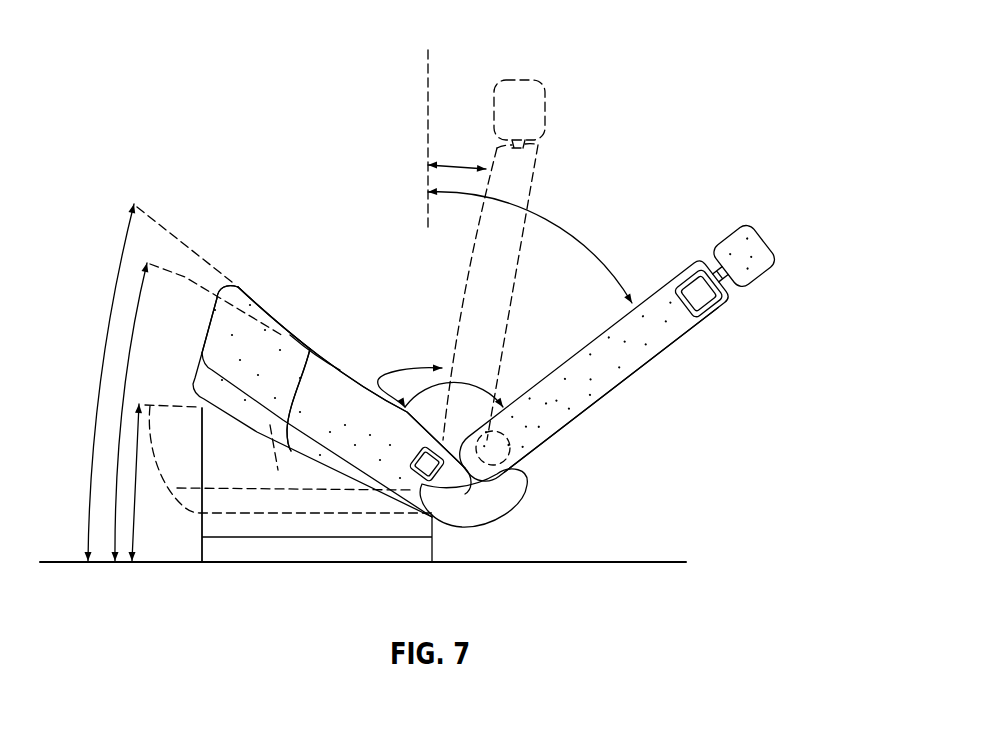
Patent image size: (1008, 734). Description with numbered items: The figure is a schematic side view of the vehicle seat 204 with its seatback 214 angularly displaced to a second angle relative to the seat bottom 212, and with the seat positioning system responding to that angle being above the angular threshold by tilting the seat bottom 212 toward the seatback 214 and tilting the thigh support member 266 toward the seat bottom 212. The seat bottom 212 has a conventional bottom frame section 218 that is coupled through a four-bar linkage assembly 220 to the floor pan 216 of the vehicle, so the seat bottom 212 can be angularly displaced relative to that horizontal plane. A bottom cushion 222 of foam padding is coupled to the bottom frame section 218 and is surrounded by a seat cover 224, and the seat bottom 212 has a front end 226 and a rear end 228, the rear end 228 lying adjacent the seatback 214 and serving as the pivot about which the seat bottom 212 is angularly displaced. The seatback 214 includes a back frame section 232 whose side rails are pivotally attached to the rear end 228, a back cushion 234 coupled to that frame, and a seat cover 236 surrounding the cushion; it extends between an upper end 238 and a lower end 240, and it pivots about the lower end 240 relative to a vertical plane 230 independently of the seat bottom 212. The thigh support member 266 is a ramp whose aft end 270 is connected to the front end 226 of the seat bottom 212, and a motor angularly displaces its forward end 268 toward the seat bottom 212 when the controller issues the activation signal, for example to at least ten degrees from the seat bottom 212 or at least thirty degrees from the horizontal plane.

The vehicle seat 204 is at (279, 170).
The seat bottom 212 is at (378, 427).
The seatback 214 is at (640, 368).
The floor pan 216 is at (652, 562).
The bottom frame section 218 is at (346, 487).
The four-bar linkage assembly 220 is at (202, 525).
The bottom cushion 222 is at (353, 411).
The seat cover 224 is at (396, 374).
The front end 226 is at (342, 366).
The rear end 228 is at (497, 513).
The vertical plane 230 is at (426, 68).
The back frame section 232 is at (683, 283).
The back cushion 234 is at (633, 366).
The seat cover 236 is at (606, 331).
The upper end 238 is at (728, 295).
The lower end 240 is at (490, 467).
The thigh support member 266 is at (266, 306).
The forward end 268 is at (238, 288).
The aft end 270 is at (310, 346).